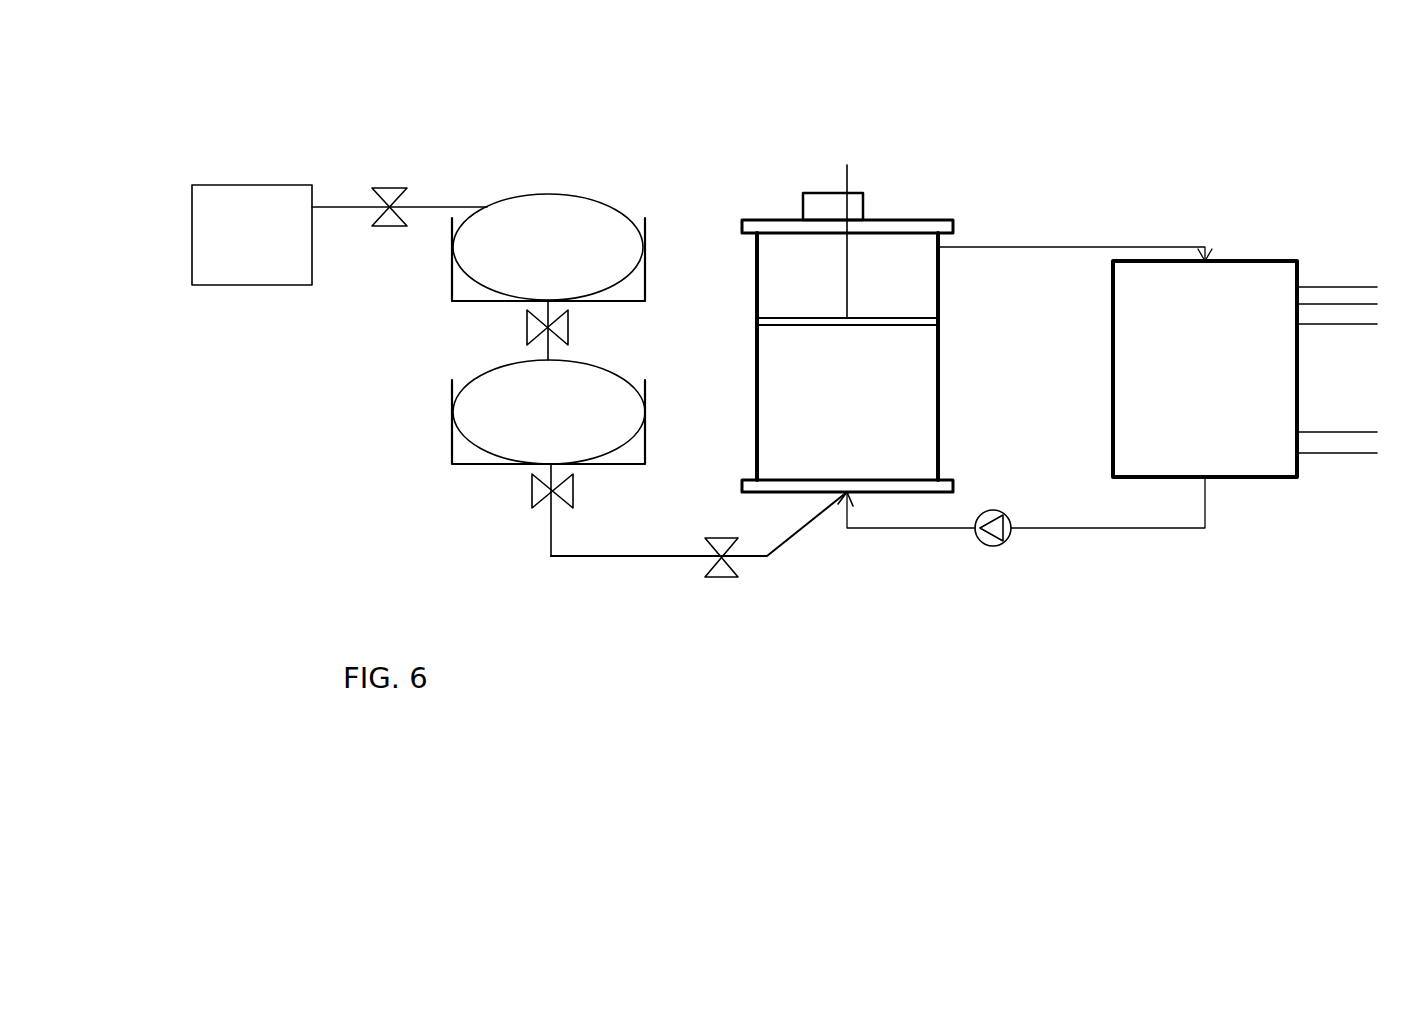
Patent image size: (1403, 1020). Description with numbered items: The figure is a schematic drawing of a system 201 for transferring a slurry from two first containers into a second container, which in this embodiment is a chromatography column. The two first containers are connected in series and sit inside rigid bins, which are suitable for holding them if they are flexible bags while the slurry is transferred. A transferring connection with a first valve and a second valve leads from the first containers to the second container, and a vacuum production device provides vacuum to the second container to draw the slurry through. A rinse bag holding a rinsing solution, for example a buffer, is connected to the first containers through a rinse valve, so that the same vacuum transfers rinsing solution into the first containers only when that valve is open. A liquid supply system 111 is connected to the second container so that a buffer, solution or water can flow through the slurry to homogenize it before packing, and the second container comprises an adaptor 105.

The system 201 is at (657, 122).
The adaptor 105 is at (925, 315).
The liquid supply system 111 is at (1230, 525).